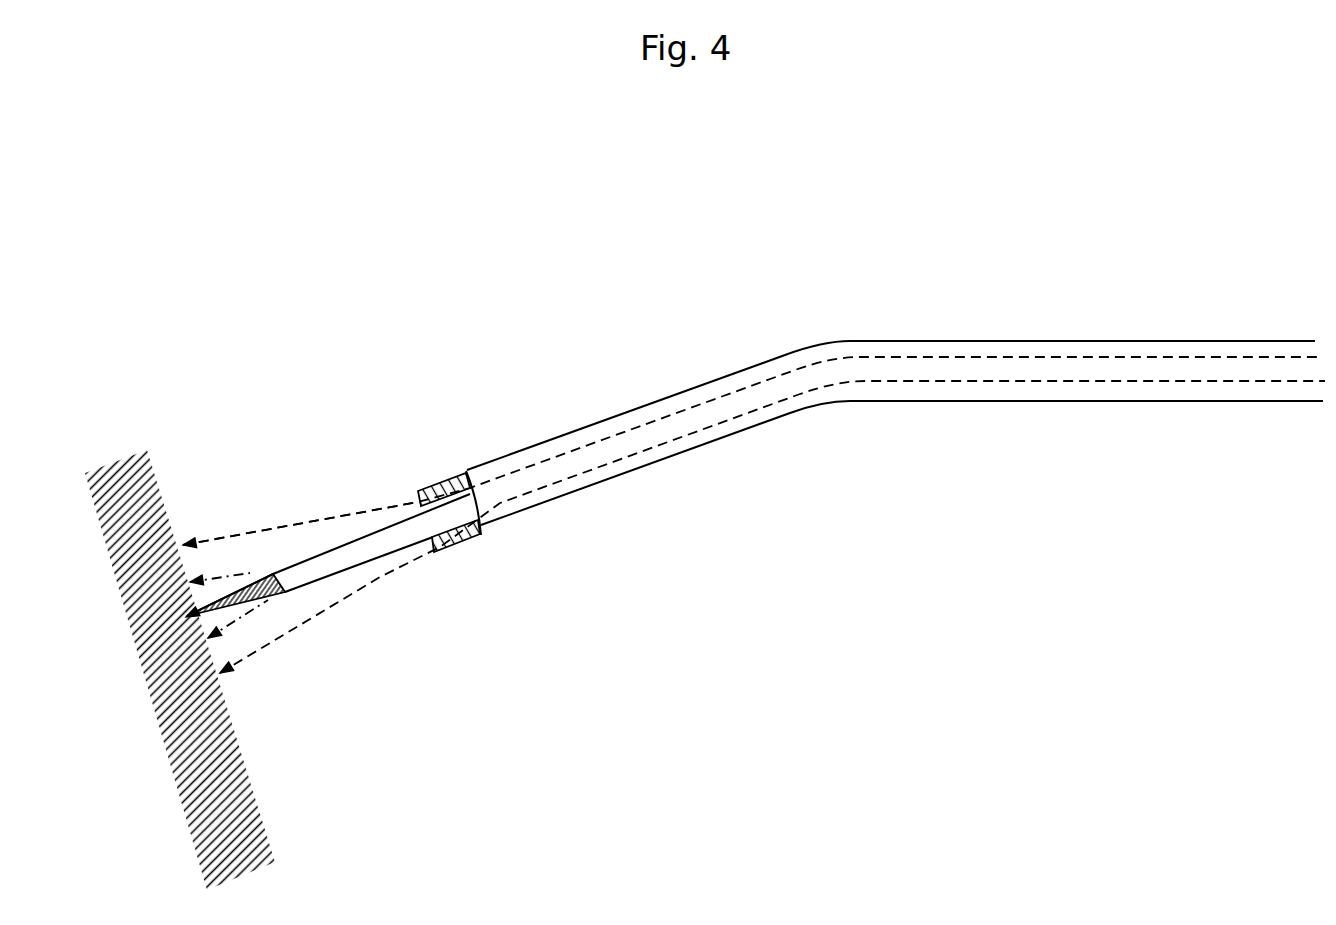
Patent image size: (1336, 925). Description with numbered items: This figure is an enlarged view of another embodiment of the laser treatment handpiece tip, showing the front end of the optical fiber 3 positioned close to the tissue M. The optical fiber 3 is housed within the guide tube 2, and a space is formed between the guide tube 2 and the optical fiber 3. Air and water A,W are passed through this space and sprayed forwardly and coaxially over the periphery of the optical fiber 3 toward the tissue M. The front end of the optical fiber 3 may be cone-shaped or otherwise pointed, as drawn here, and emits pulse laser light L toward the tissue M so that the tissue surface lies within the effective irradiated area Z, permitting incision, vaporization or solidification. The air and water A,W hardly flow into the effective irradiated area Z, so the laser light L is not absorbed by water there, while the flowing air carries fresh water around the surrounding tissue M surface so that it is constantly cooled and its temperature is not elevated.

The guide tube 2 is at (750, 398).
The optical fiber 3 is at (371, 540).
The effective irradiated area Z is at (258, 585).
The pulse laser light L is at (237, 574).
The air and water A,W is at (273, 527).
The tissue M is at (253, 825).